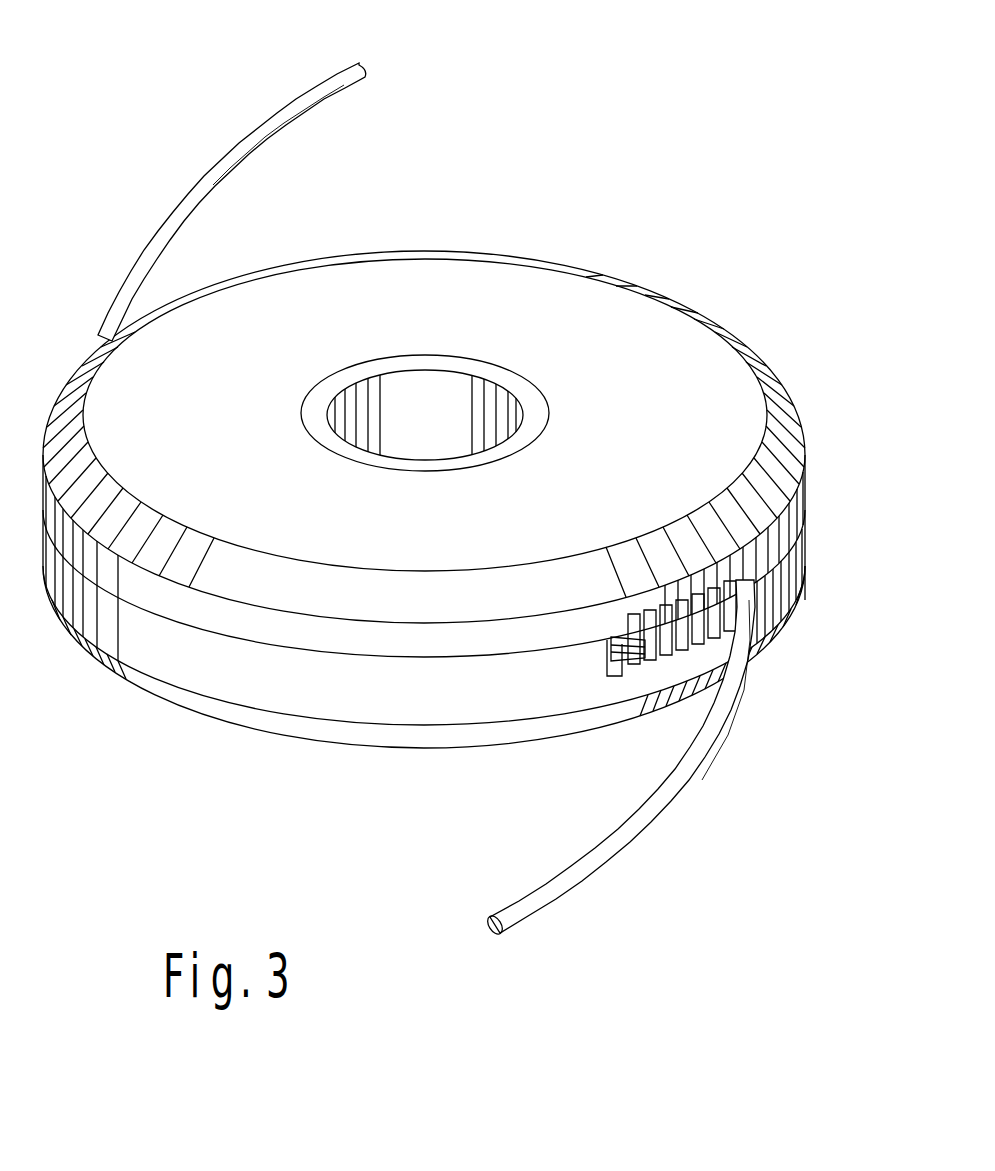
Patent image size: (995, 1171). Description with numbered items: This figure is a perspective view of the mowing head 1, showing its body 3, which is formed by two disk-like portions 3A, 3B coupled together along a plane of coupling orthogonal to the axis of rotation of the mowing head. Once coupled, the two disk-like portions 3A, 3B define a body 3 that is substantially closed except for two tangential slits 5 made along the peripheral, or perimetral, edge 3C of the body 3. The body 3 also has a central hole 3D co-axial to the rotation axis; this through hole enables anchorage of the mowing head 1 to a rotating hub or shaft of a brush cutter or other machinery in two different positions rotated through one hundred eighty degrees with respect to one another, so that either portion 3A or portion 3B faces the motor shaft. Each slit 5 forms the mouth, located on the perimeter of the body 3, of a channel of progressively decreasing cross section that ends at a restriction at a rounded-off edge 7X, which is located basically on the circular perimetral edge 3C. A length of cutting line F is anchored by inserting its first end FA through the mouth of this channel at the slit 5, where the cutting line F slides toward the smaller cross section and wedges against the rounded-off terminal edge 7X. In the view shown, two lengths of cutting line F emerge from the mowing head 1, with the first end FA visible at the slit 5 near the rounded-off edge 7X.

The mowing head 1 is at (573, 154).
The body 3 is at (812, 358).
The disk-like portion 3A is at (577, 315).
The disk-like portion 3B is at (272, 690).
The perimetral edge 3C is at (814, 602).
The central hole 3D is at (385, 395).
The tangential slit 5 is at (790, 545).
The rounded-off edge 7X is at (614, 664).
The cutting line F is at (226, 162).
The first end of cutting line FA is at (626, 638).